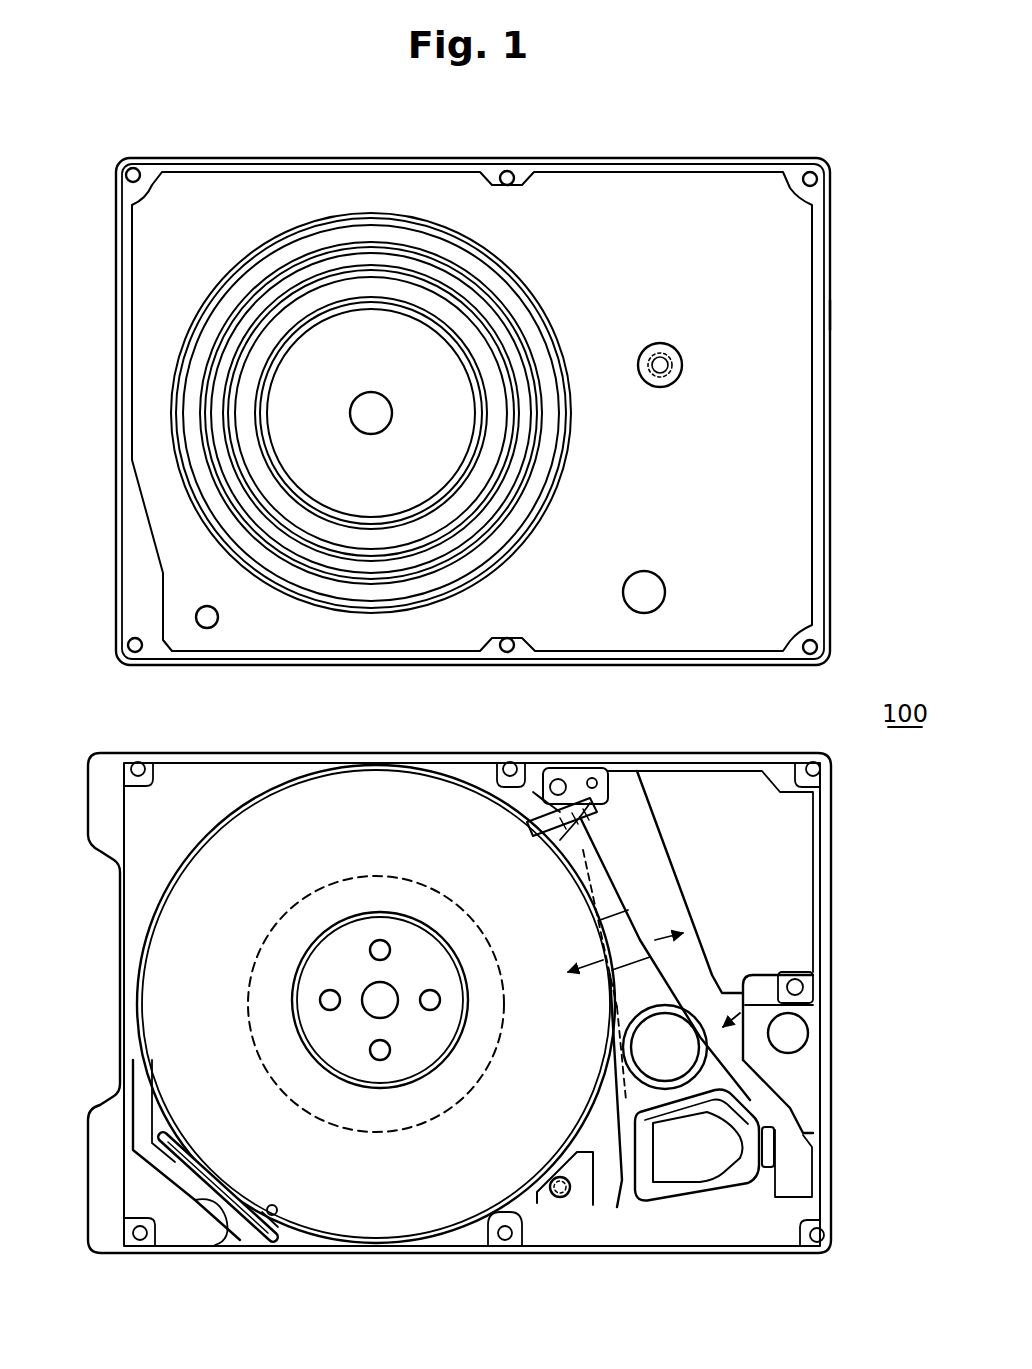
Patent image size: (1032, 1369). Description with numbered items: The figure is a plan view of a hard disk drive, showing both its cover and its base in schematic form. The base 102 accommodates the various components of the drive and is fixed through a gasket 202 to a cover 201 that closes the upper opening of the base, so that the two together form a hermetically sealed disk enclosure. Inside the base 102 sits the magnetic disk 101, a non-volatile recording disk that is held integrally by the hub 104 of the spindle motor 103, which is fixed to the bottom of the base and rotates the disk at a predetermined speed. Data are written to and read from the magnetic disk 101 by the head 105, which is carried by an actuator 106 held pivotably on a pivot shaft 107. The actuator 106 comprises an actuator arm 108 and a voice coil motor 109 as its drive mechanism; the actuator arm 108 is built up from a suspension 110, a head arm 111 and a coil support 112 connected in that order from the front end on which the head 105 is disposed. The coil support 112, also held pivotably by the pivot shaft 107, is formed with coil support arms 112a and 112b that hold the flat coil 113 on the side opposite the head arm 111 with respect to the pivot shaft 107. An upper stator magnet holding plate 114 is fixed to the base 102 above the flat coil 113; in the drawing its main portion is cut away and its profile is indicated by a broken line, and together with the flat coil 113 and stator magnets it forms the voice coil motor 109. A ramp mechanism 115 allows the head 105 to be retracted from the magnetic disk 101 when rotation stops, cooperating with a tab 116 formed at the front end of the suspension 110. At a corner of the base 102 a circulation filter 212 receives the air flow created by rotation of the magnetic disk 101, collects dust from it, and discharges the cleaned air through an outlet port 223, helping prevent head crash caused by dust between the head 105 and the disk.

The magnetic disk 101 is at (443, 1218).
The base 102 is at (157, 1200).
The spindle motor 103 is at (248, 986).
The hub 104 is at (397, 1073).
The head 105 is at (590, 828).
The actuator 106 is at (823, 1000).
The pivot shaft 107 is at (650, 1053).
The actuator arm 108 is at (690, 990).
The VCM (voice coil motor) 109 is at (675, 1215).
The suspension 110 is at (597, 865).
The head arm 111 is at (692, 944).
The coil support 112 is at (592, 1091).
The coil support arm 112a is at (618, 1190).
The coil support arm 112b is at (778, 1145).
The flat coil 113 is at (720, 1180).
The upper stator magnet holding plate 114 is at (568, 1172).
The ramp mechanism 115 is at (548, 763).
The tab 116 is at (560, 848).
The cover 201 is at (655, 195).
The gasket 202 is at (820, 310).
The circulation filter 212 is at (197, 1195).
The outlet port 223 is at (278, 1222).